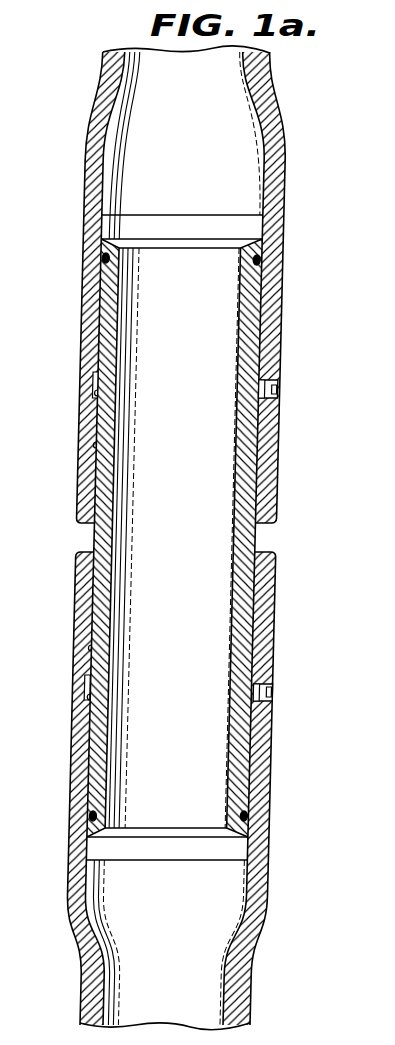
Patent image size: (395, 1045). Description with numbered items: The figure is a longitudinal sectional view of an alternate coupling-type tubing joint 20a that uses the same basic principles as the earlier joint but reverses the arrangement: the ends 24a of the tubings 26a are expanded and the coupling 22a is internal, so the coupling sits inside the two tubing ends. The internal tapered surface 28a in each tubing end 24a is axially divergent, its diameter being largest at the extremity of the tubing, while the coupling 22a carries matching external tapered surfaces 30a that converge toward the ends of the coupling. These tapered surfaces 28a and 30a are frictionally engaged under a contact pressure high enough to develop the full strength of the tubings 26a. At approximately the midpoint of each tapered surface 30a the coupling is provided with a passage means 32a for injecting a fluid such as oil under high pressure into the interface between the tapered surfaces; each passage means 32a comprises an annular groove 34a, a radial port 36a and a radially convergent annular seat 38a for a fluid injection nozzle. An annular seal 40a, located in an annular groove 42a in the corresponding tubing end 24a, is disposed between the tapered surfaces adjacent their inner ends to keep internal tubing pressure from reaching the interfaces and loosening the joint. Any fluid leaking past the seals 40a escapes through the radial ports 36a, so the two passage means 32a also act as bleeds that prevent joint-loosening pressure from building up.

The coupling-type tubing joint 20a is at (288, 334).
The coupling 22a is at (258, 546).
The tubing end 24a is at (278, 228).
The tubing 26a is at (267, 116).
The tapered surface 28a is at (98, 446).
The tapered surface 30a is at (98, 333).
The passage means 32a is at (288, 393).
The annular groove 34a is at (95, 393).
The radial port 36a is at (275, 379).
The annular seat 38a is at (278, 398).
The annular seal 40a is at (107, 255).
The annular groove 42a is at (257, 263).